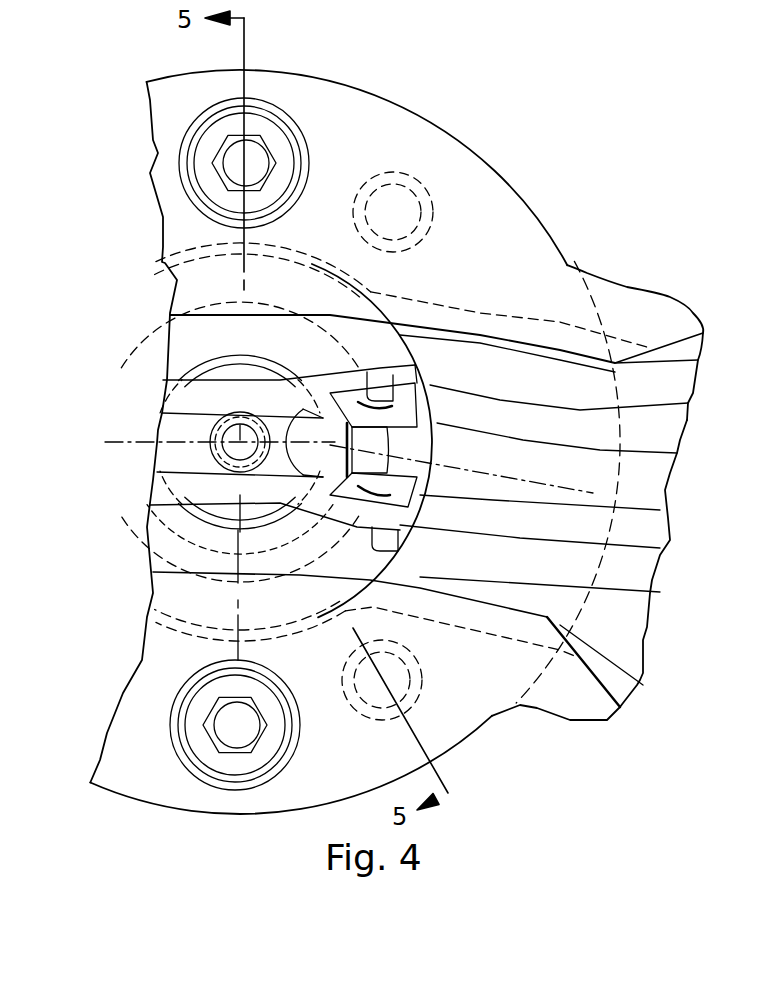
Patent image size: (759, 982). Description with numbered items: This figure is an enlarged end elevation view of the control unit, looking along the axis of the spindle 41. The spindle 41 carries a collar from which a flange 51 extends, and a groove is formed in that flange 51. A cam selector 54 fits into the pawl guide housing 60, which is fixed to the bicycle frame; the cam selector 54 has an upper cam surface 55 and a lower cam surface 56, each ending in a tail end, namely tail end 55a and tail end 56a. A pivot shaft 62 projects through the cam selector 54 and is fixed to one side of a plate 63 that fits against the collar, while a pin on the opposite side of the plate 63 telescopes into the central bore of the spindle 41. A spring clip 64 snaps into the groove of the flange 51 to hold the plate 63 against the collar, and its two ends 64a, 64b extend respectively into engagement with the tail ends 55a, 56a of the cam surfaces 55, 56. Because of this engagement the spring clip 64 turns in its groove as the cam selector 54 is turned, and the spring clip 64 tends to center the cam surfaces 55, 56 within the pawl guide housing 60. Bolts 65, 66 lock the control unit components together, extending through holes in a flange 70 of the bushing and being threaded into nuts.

The spindle 41 is at (210, 438).
The flange 51 is at (430, 388).
The cam selector 54 is at (410, 512).
The upper cam surface 55 is at (405, 373).
The tail end of upper cam surface 55a is at (388, 370).
The lower cam surface 56 is at (254, 498).
The tail end of lower cam surface 56a is at (398, 544).
The pawl guide housing 60 is at (618, 287).
The pivot shaft 62 is at (250, 450).
The plate 63 is at (226, 330).
The spring clip 64 is at (292, 356).
The end of spring clip 64a is at (438, 415).
The end of spring clip 64b is at (445, 497).
The bolt 65 is at (263, 160).
The bolt 66 is at (212, 730).
The flange of bushing 70 is at (676, 522).